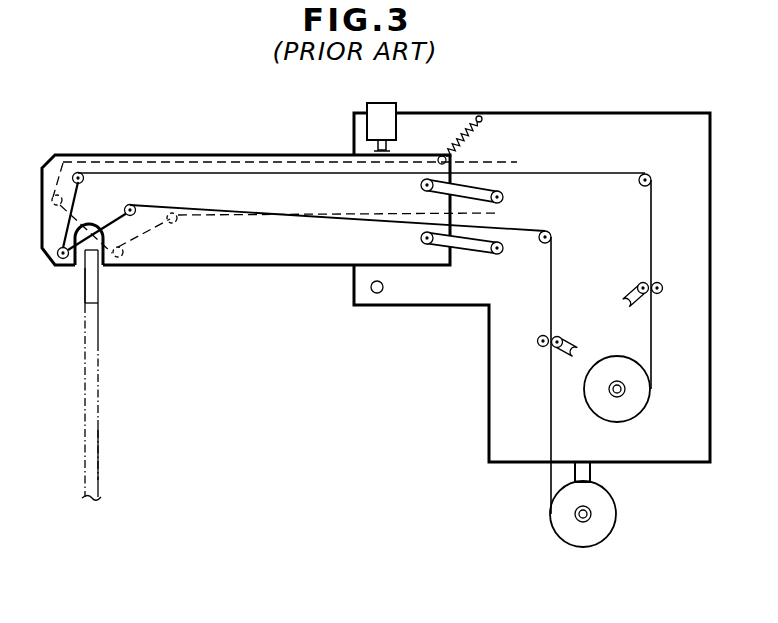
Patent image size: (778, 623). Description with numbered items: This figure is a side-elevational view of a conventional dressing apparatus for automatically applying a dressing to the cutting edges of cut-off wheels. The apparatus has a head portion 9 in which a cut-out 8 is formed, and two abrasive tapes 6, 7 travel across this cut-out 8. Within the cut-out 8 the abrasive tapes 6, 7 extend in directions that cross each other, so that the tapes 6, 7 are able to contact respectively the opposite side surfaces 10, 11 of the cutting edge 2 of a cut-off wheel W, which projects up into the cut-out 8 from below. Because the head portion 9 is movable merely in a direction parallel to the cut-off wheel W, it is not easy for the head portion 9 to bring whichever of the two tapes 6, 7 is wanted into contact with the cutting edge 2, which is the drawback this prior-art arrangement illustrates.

The cutting edge 2 is at (88, 285).
The abrasive tape 6 is at (243, 173).
The abrasive tape 7 is at (142, 163).
The cut-out 8 is at (105, 233).
The head portion 9 is at (262, 258).
The side surface 10 is at (99, 273).
The side surface 11 is at (84, 273).
The cut-off wheel W is at (98, 430).